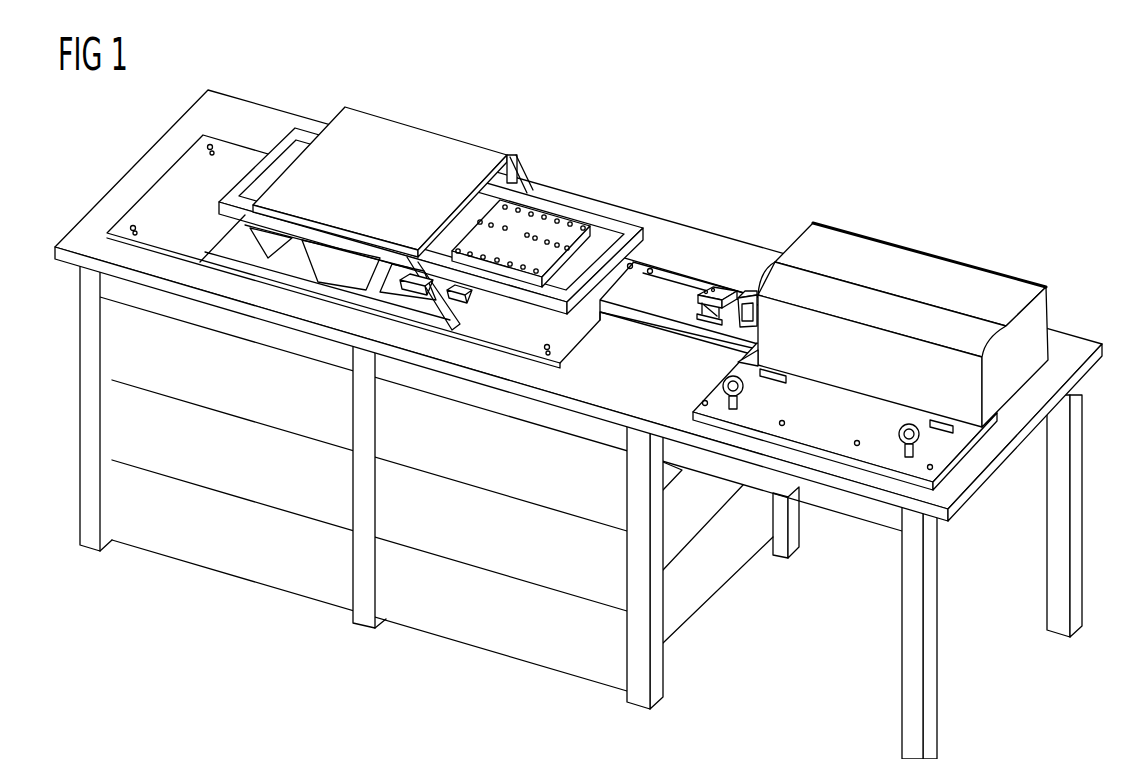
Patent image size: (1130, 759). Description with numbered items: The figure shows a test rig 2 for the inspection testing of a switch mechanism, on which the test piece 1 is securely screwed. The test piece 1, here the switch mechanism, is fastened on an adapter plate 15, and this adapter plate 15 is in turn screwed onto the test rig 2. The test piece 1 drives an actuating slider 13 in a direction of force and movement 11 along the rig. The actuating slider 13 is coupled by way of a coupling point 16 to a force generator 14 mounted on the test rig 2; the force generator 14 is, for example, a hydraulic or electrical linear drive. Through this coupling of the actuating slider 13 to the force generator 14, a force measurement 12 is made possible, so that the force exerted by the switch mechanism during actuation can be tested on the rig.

The test piece 1 is at (940, 263).
The test rig 2 is at (122, 179).
The direction of force and movement 11 is at (645, 332).
The force measurement 12 is at (717, 295).
The actuating slider 13 is at (748, 298).
The force generator 14 is at (430, 146).
The adapter plate 15 is at (948, 450).
The coupling point 16 is at (759, 334).